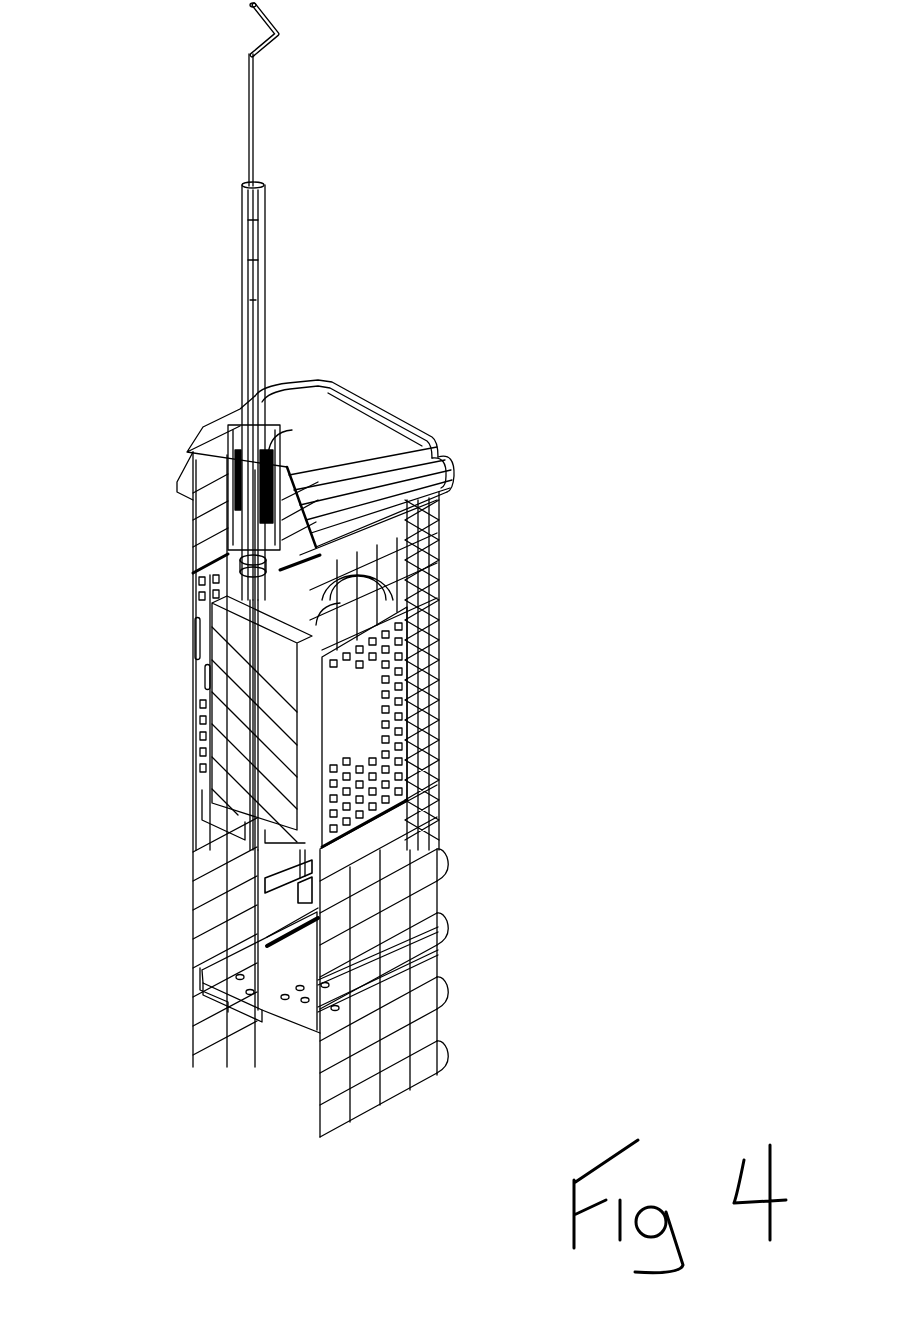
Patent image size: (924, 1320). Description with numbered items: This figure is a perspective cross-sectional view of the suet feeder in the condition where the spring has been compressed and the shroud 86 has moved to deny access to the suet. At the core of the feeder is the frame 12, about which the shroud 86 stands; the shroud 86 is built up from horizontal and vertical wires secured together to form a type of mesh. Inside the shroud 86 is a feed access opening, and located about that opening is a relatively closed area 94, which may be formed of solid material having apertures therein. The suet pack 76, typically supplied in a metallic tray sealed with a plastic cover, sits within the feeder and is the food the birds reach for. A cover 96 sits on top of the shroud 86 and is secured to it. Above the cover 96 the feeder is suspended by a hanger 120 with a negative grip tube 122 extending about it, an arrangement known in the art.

The hanger 120 is at (255, 95).
The negative grip tube 122 is at (262, 265).
The cover 96 is at (358, 410).
The relatively closed area 94 is at (407, 623).
The suet pack 76 is at (230, 723).
The shroud 86 is at (483, 1001).
The frame 12 is at (282, 963).